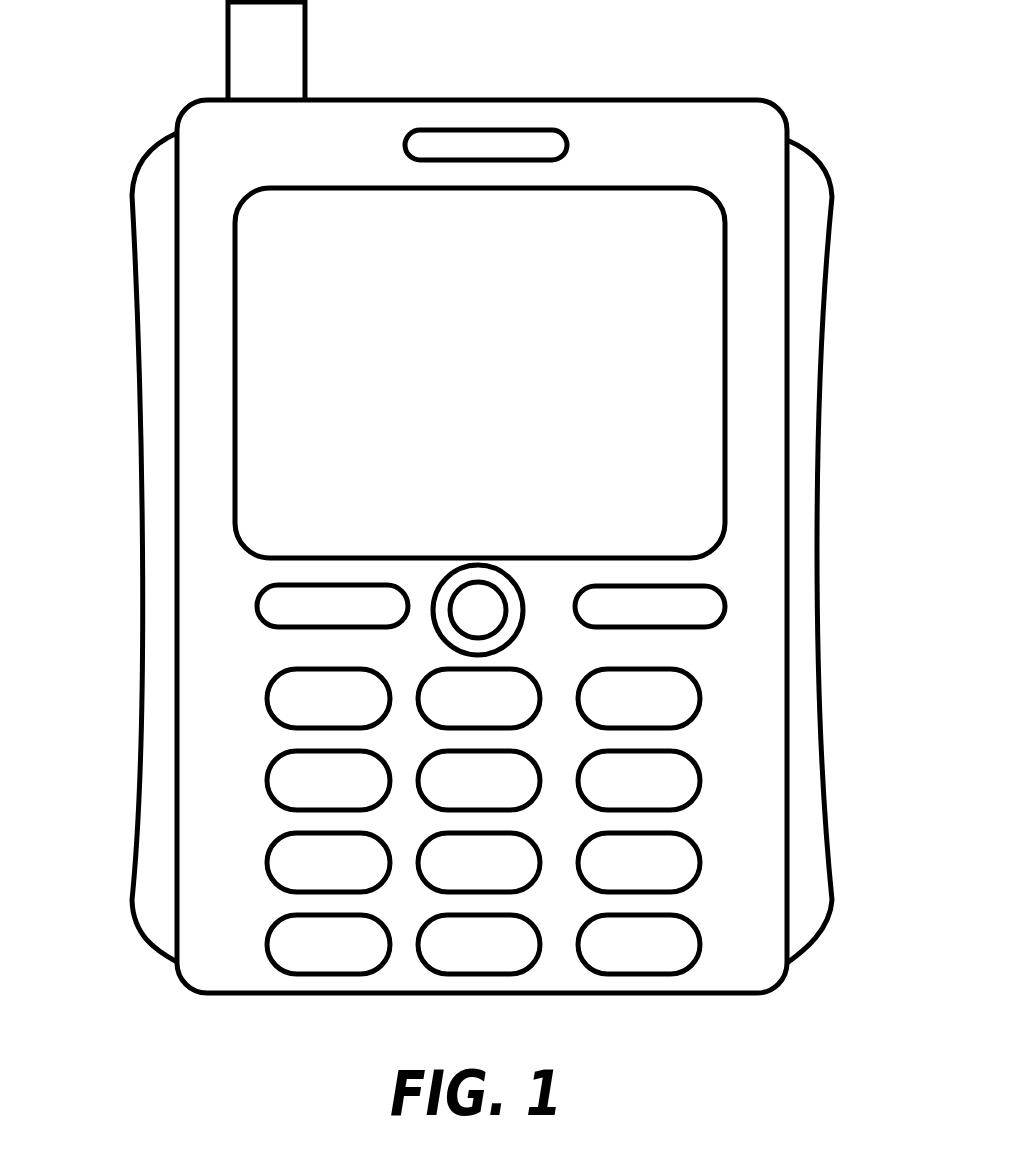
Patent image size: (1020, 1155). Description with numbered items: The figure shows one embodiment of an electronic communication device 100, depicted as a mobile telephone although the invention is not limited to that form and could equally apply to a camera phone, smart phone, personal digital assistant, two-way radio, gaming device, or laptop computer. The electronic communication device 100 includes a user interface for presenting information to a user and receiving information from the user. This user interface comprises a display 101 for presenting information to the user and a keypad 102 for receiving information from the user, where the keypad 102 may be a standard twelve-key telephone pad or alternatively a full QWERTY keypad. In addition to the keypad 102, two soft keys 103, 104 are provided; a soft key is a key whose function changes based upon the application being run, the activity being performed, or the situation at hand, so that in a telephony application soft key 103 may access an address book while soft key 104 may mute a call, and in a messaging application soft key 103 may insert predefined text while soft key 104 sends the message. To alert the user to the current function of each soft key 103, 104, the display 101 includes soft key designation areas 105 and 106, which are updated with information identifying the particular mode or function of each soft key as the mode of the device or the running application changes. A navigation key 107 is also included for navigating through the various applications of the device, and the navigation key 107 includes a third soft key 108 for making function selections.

The electronic communication device 100 is at (105, 181).
The display 101 is at (232, 318).
The keypad 102 is at (702, 777).
The soft key 103 is at (310, 605).
The soft key 104 is at (685, 610).
The soft key designation area 105 is at (263, 527).
The soft key designation area 106 is at (693, 533).
The navigation key 107 is at (515, 610).
The third soft key 108 is at (478, 610).